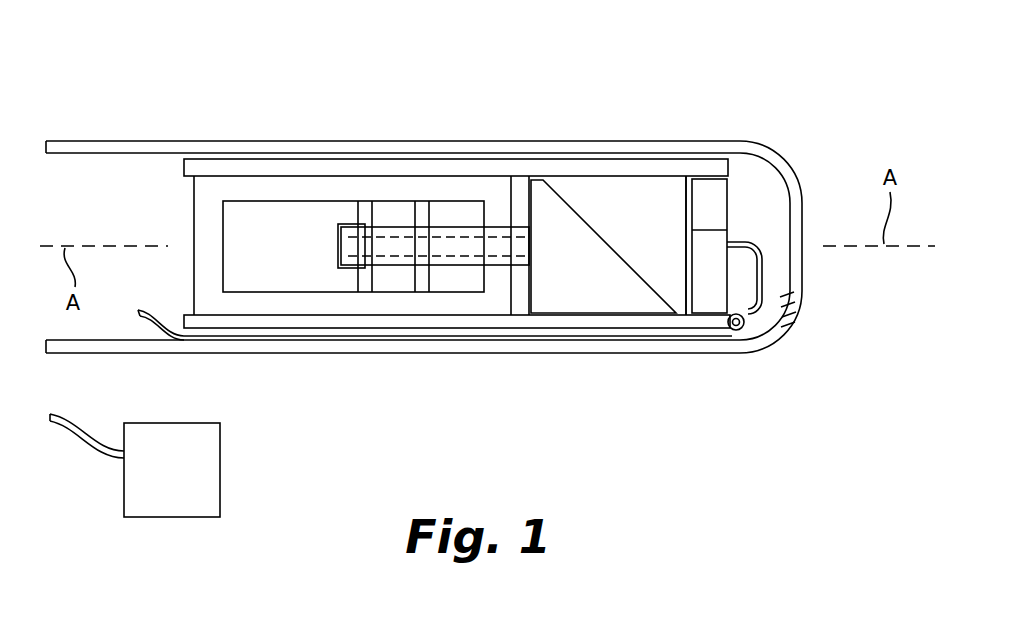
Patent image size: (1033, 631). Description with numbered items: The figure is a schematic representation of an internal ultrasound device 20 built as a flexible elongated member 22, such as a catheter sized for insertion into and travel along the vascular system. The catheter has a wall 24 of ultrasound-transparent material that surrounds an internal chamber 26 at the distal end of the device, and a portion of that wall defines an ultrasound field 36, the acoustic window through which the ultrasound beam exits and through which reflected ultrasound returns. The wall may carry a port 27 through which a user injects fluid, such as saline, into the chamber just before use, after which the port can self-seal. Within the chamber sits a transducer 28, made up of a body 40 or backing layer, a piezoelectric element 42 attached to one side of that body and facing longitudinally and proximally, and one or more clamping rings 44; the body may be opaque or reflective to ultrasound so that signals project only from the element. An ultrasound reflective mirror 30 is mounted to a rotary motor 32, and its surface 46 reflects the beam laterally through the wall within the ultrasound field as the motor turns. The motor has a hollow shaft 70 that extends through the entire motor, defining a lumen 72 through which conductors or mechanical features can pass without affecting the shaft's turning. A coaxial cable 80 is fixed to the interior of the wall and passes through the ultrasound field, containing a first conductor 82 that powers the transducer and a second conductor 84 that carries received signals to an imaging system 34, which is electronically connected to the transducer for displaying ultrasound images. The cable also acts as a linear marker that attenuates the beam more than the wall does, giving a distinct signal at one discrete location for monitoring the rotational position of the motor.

The device 20 is at (318, 104).
The flexible elongated member 22 is at (143, 140).
The wall 24 is at (430, 148).
The internal chamber 26 is at (750, 188).
The port 27 is at (787, 310).
The transducer 28 is at (729, 218).
The ultrasound reflective mirror 30 is at (590, 282).
The rotary motor 32 is at (385, 292).
The imaging system 34 is at (167, 423).
The ultrasound field 36 is at (622, 152).
The body 40 is at (708, 297).
The piezoelectric element 42 is at (682, 202).
The clamping rings 44 is at (705, 178).
The surface 46 is at (568, 200).
The shaft 70 is at (467, 250).
The lumen 72 is at (519, 253).
The coaxial cable 80 is at (278, 354).
The first conductor 82 is at (746, 317).
The second conductor 84 is at (760, 283).